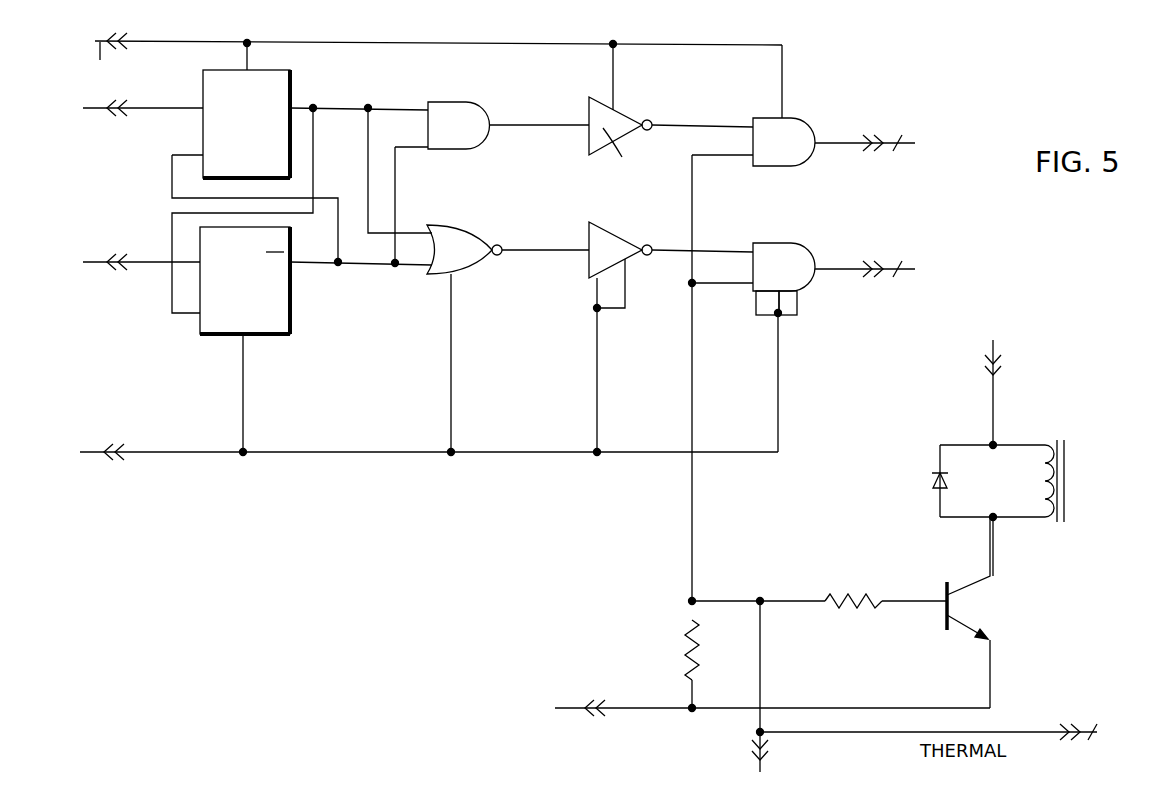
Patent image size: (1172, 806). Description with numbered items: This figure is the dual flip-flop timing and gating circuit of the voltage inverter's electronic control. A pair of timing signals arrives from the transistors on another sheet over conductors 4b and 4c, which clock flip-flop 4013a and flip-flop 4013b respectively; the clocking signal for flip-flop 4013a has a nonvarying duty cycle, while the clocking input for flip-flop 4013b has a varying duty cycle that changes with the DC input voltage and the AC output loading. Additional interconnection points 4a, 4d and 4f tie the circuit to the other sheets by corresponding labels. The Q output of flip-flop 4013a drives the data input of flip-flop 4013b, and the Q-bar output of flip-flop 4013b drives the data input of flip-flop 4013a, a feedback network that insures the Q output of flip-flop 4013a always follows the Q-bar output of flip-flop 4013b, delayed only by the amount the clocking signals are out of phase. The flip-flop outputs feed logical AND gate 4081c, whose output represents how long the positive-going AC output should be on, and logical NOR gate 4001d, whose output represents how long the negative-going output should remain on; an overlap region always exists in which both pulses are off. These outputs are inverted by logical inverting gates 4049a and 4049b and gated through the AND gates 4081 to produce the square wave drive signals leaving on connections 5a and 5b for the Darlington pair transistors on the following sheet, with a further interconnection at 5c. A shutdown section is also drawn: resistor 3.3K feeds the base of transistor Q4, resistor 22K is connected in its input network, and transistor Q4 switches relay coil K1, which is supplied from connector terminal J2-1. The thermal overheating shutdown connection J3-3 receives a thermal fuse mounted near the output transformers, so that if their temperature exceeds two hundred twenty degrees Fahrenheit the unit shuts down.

The interconnection conductor 4a is at (107, 59).
The timing signal conductor 4b is at (92, 108).
The timing signal conductor 4c is at (100, 262).
The interconnection conductor 4d is at (95, 452).
The interconnection conductor 4f is at (575, 706).
The drive signal output connection 5a is at (890, 129).
The drive signal output connection 5b is at (902, 258).
The interconnection connection 5c is at (764, 762).
The flip-flop 4013a is at (284, 70).
The flip-flop 4013b is at (290, 318).
The logical AND gate 4081c is at (470, 142).
The logical NOR gate 4001d is at (468, 230).
The logical inverting gate 4049a is at (620, 131).
The logical inverting gate 4049b is at (622, 218).
The logical AND gate 4081 is at (796, 156).
The resistor 22K is at (659, 650).
The resistor 3.3K is at (853, 589).
The transistor Q4 is at (1007, 612).
The relay coil K1 is at (1026, 458).
The connector terminal J2-1 is at (995, 345).
The thermal overheating shutdown connection J3-3 is at (1095, 718).